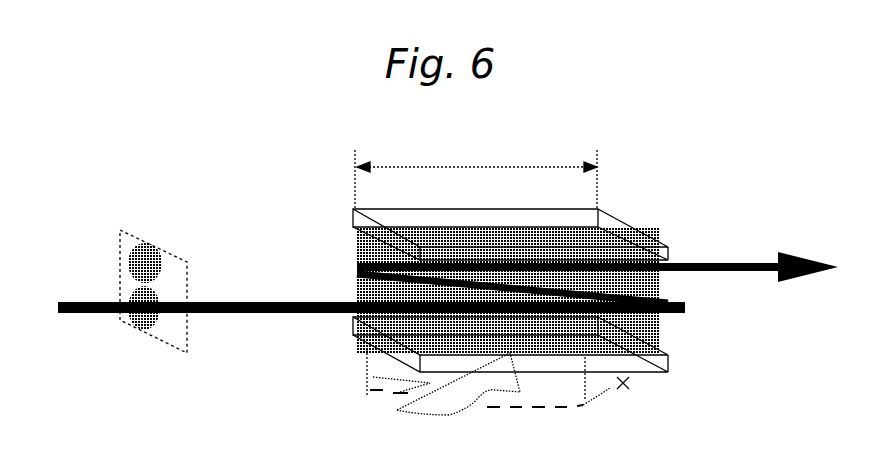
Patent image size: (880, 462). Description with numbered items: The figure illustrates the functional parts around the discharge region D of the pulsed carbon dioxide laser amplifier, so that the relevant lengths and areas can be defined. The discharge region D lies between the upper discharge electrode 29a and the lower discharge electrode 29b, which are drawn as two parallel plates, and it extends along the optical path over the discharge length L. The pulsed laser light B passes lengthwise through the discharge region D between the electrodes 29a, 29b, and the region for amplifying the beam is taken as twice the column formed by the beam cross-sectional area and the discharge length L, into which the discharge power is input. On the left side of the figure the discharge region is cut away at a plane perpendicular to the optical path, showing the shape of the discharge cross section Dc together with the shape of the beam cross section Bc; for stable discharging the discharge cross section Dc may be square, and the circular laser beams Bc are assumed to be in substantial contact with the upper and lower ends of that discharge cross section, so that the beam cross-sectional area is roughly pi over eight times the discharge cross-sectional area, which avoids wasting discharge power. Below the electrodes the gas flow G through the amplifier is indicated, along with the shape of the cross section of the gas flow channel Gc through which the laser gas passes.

The discharge electrode 29a is at (352, 213).
The discharge electrode 29b is at (668, 358).
The discharge region D is at (532, 262).
The discharge length L is at (476, 176).
The pulsed laser light B is at (718, 260).
The shape of discharge cross section Dc is at (187, 262).
The shape of beam cross section Bc is at (140, 331).
The gas flow G is at (476, 392).
The shape of cross section of gas flow channel Gc is at (622, 383).